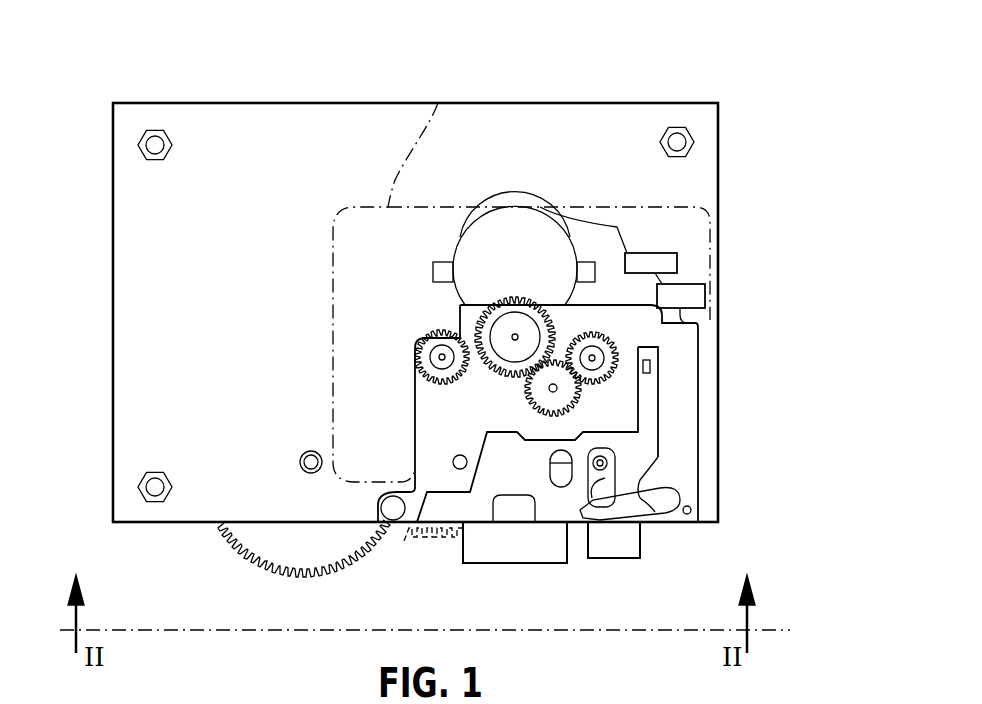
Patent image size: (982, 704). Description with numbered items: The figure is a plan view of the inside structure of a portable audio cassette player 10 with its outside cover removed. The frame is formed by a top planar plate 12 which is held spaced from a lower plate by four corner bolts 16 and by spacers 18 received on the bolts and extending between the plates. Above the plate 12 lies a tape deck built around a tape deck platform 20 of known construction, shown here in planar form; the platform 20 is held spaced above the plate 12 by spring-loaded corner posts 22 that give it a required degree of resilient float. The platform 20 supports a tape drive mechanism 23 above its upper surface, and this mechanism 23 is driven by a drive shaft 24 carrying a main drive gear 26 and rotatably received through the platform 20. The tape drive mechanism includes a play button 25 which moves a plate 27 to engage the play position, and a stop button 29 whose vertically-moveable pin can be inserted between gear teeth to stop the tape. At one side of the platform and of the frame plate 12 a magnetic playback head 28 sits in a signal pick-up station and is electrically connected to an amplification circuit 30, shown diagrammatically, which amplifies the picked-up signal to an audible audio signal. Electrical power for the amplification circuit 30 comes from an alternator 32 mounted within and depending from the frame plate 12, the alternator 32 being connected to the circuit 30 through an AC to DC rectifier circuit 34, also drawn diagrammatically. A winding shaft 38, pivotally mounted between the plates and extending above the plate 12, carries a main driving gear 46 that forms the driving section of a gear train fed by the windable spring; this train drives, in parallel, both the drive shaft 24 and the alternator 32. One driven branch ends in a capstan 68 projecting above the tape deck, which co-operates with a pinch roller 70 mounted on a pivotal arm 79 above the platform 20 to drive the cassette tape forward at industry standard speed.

The portable audio cassette player 10 is at (121, 87).
The top planar plate 12 is at (165, 299).
The corner bolts 16 is at (156, 136).
The spacers 18 is at (438, 98).
The tape deck platform 20 is at (698, 370).
The spring-loaded corner posts 22 is at (398, 512).
The tape drive mechanism 23 is at (611, 338).
The drive shaft 24 is at (514, 340).
The play button 25 is at (494, 547).
The main drive gear 26 is at (478, 318).
The plate 27 is at (653, 401).
The magnetic playback head 28 is at (525, 515).
The stop button 29 is at (615, 552).
The amplification circuit 30 is at (705, 294).
The alternator 32 is at (540, 207).
The AC to DC rectifier circuit 34 is at (677, 255).
The winding shaft 38 is at (310, 451).
The main driving gear 46 is at (336, 556).
The capstan 68 is at (607, 461).
The pinch roller 70 is at (597, 497).
The pivotal arm 79 is at (653, 505).